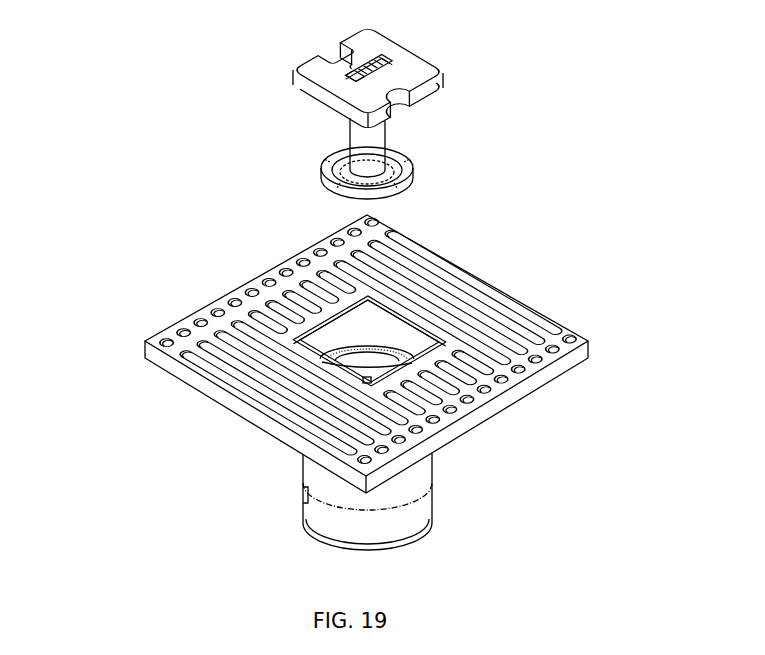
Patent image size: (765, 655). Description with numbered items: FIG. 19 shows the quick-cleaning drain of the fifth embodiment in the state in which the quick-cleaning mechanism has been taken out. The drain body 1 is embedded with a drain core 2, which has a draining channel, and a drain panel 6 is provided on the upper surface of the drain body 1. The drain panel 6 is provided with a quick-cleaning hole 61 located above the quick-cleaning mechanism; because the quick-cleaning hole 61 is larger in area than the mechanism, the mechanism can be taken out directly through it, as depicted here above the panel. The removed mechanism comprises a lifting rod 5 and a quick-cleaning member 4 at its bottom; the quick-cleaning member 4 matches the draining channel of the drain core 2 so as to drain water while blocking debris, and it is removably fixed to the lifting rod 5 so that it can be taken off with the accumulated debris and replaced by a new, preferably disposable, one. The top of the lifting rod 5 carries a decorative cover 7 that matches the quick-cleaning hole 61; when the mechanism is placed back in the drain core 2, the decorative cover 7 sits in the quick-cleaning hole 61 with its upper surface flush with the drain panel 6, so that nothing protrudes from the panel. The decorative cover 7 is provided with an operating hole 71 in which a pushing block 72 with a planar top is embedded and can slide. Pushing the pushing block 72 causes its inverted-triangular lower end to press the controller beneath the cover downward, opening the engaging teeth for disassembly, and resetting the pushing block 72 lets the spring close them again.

The drain body 1 is at (185, 348).
The drain core 2 is at (307, 492).
The quick-cleaning member 4 is at (333, 148).
The lifting rod 5 is at (358, 135).
The drain panel 6 is at (478, 322).
The quick-cleaning hole 61 is at (360, 333).
The decorative cover 7 is at (402, 92).
The operating hole 71 is at (348, 69).
The pushing block 72 is at (376, 62).